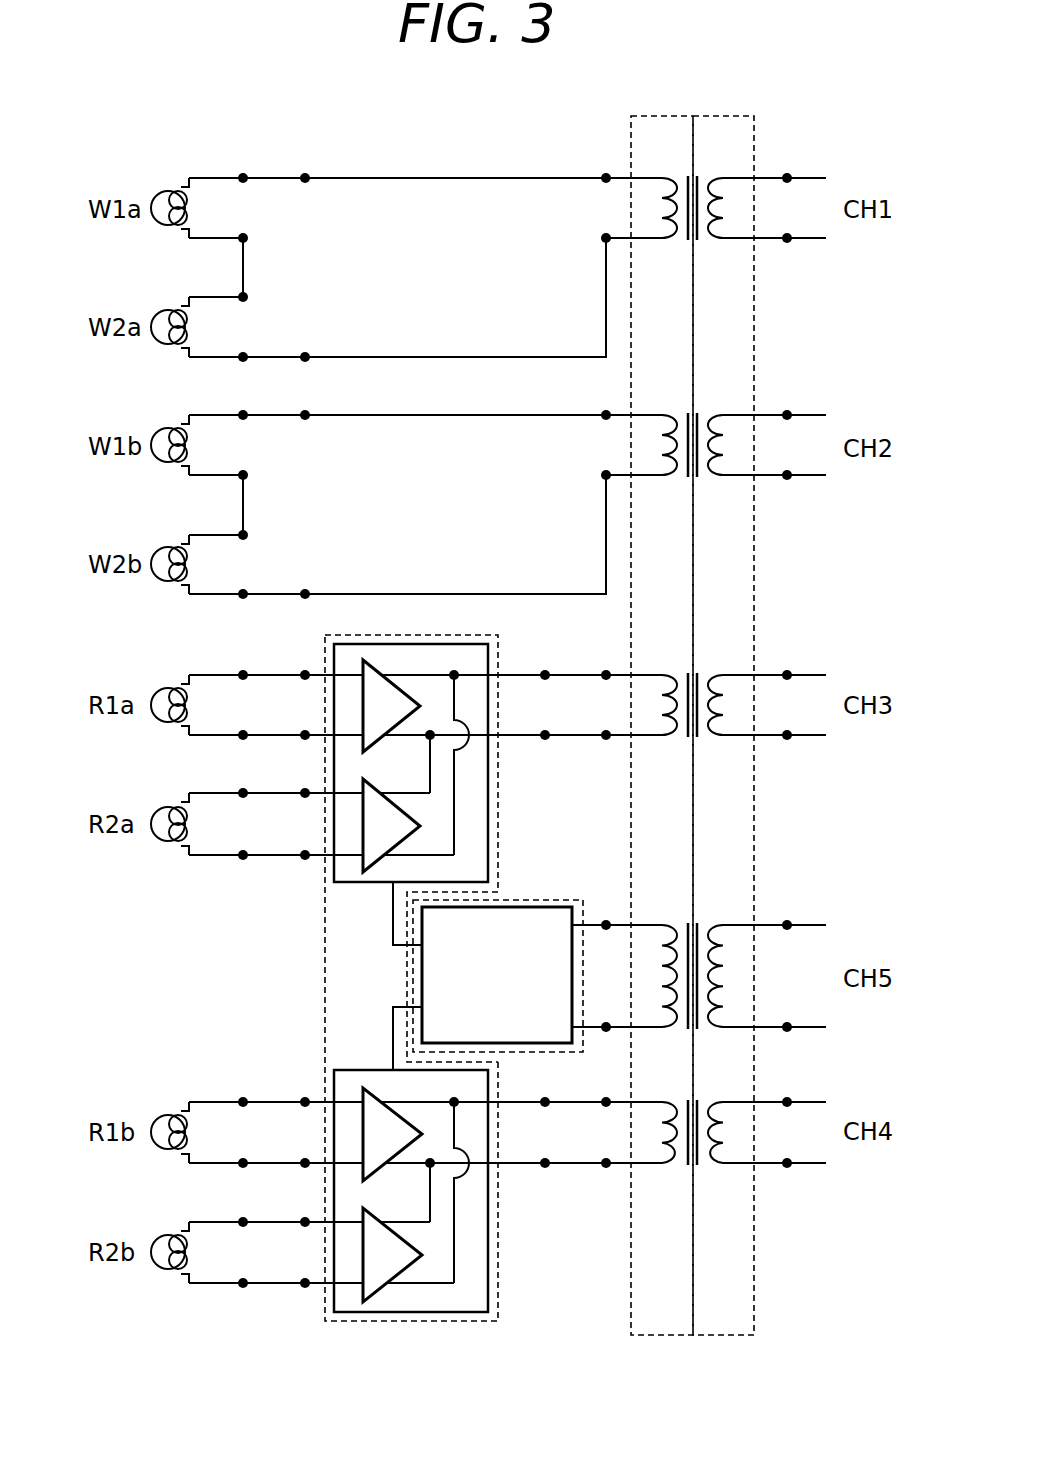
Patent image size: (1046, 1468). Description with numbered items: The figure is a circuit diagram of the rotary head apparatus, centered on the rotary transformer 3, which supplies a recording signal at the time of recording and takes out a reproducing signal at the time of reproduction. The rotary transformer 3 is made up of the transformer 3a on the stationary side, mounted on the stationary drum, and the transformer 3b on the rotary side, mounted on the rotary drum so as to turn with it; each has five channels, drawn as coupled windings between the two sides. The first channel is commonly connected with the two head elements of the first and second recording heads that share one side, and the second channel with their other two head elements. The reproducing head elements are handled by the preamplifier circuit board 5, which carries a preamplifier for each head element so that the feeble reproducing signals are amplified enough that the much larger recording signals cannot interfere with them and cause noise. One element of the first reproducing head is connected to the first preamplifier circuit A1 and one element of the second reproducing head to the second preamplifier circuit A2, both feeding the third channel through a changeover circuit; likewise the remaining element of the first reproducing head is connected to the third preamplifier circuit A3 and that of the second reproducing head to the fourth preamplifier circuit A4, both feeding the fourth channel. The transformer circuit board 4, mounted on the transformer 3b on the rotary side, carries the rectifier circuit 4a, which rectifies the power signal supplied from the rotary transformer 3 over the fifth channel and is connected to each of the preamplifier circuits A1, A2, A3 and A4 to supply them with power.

The rotary transformer 3 is at (722, 112).
The transformer on the stationary side 3a is at (754, 124).
The transformer on the rotary side 3b is at (630, 135).
The transformer circuit board 4 is at (518, 900).
The rectifier circuit 4a is at (557, 906).
The preamplifier circuit board 5 is at (498, 655).
The first preamplifier circuit A1 is at (370, 668).
The second preamplifier circuit A2 is at (368, 862).
The third preamplifier circuit A3 is at (370, 1095).
The fourth preamplifier circuit A4 is at (370, 1284).